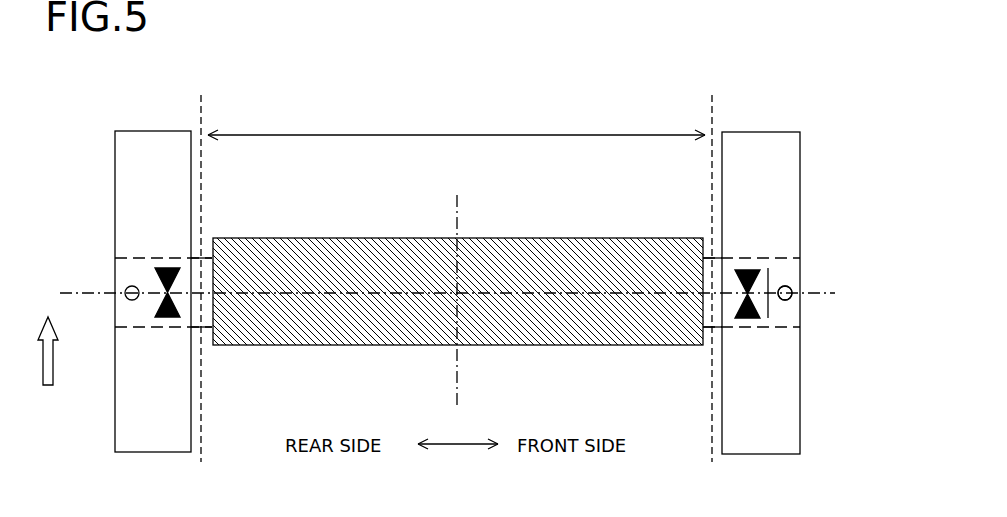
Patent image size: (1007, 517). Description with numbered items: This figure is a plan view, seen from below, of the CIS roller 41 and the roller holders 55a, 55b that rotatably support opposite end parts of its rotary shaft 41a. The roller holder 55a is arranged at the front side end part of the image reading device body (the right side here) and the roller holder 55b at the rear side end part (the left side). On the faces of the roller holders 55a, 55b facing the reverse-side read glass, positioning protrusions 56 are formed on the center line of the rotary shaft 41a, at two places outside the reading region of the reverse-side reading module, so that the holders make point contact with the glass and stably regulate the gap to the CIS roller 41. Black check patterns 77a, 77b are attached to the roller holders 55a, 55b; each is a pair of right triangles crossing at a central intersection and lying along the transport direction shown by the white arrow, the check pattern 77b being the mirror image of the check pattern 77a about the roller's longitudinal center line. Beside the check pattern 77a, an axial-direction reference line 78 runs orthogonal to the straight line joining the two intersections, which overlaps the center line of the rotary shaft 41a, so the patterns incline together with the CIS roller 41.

The roller holder 55b is at (115, 172).
The roller holder 55a is at (800, 170).
The check pattern 77b is at (163, 268).
The check pattern 77a is at (750, 270).
The CIS roller 41 is at (542, 238).
The rotary shaft 41a is at (768, 268).
The axial-direction reference line 78 is at (780, 288).
The positioning protrusion 56 is at (126, 298).